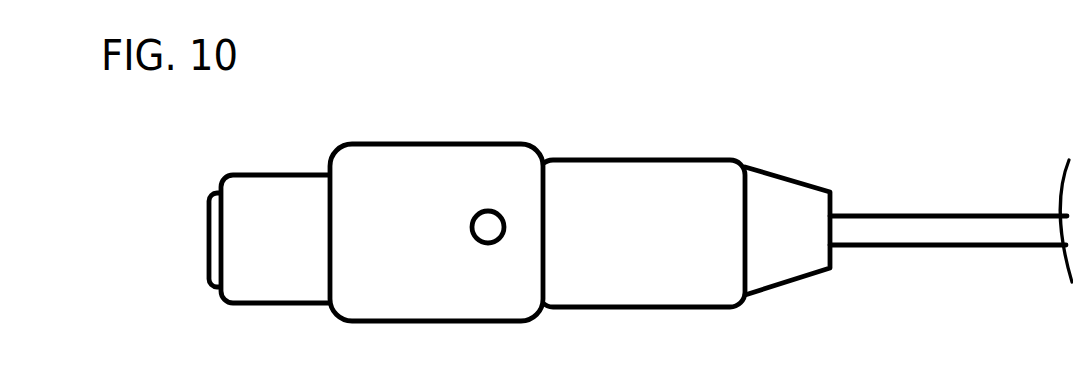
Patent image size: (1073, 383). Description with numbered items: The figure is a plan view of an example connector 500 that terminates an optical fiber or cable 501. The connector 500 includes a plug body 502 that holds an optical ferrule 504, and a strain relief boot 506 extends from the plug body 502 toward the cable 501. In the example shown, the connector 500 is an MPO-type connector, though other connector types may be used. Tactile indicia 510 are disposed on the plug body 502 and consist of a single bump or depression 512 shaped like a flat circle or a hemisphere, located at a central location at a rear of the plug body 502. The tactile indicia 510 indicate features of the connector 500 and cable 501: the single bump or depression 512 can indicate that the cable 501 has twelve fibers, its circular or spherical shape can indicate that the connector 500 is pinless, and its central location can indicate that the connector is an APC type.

The connector 500 is at (594, 181).
The optical fiber or cable 501 is at (919, 215).
The plug body 502 is at (395, 142).
The optical ferrule 504 is at (207, 245).
The strain relief boot 506 is at (737, 158).
The tactile indicia 510 is at (441, 245).
The bump or depression 512 is at (473, 210).